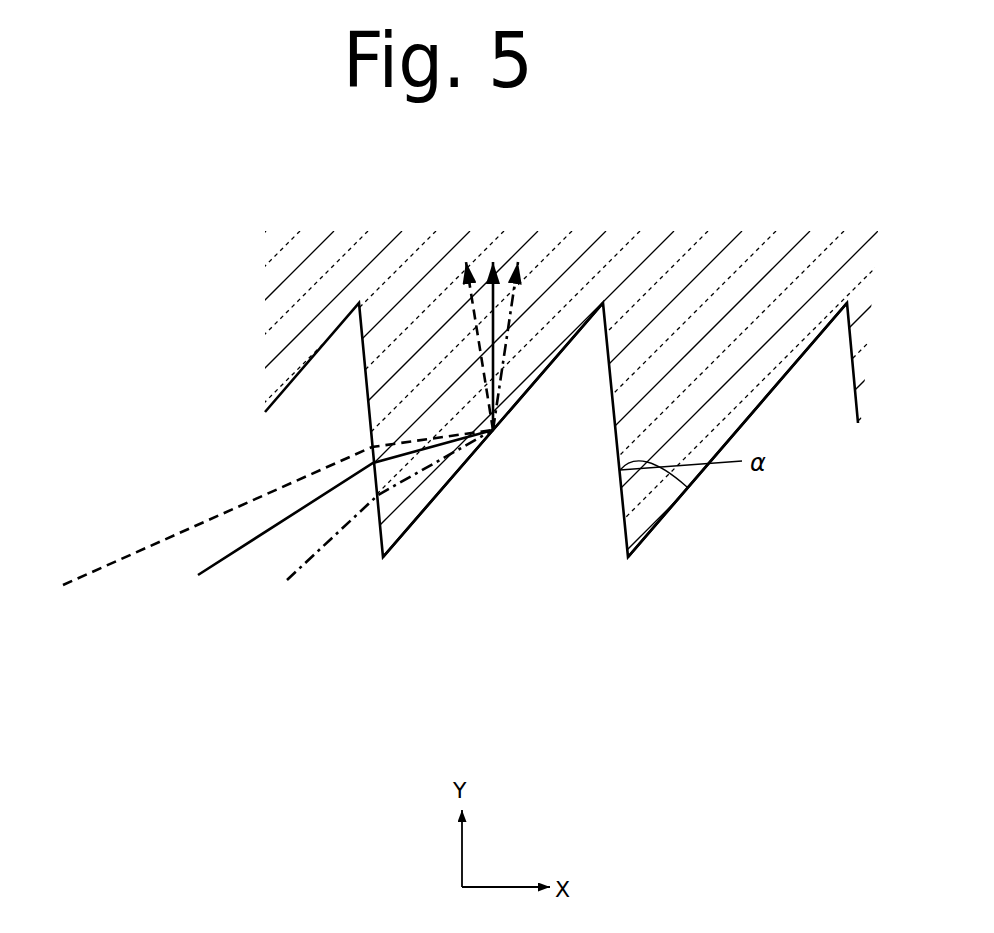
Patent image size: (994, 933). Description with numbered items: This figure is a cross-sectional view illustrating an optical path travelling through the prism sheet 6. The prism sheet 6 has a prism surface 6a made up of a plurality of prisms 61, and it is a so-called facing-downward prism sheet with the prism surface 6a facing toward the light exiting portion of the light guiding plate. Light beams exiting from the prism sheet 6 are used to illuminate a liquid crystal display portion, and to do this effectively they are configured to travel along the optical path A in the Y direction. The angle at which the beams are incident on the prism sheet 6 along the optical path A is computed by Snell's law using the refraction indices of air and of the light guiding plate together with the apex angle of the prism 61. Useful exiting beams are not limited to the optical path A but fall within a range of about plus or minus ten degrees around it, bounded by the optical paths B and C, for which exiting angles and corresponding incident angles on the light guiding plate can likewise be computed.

The prism sheet 6 is at (705, 288).
The prism 61 is at (393, 523).
The prism surface 6a is at (699, 549).
The optical path A is at (340, 437).
The optical path B is at (270, 440).
The optical path C is at (398, 437).